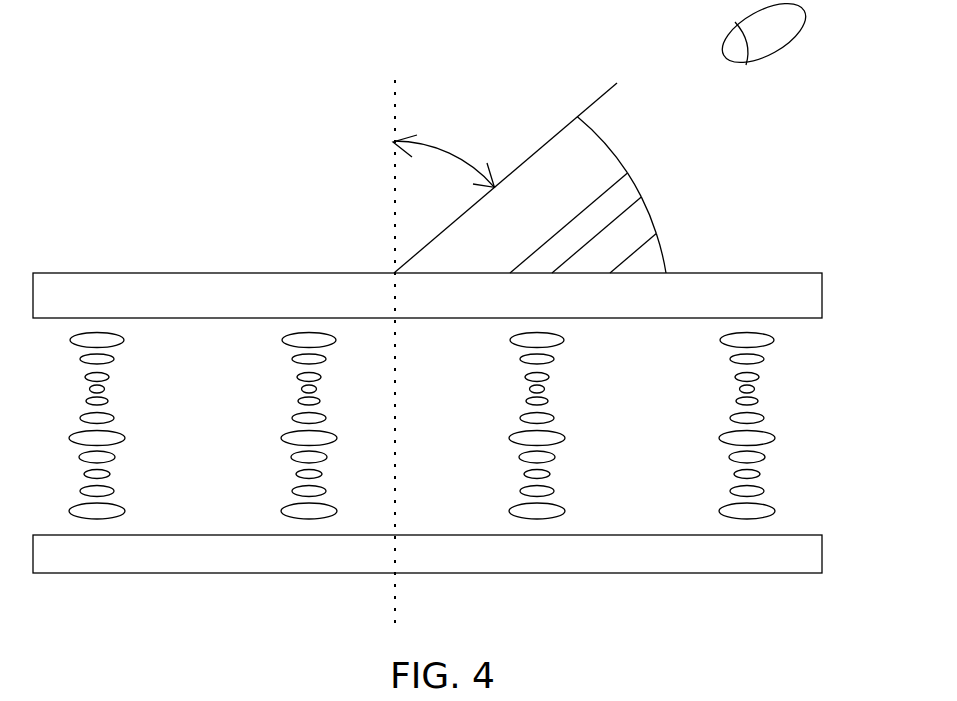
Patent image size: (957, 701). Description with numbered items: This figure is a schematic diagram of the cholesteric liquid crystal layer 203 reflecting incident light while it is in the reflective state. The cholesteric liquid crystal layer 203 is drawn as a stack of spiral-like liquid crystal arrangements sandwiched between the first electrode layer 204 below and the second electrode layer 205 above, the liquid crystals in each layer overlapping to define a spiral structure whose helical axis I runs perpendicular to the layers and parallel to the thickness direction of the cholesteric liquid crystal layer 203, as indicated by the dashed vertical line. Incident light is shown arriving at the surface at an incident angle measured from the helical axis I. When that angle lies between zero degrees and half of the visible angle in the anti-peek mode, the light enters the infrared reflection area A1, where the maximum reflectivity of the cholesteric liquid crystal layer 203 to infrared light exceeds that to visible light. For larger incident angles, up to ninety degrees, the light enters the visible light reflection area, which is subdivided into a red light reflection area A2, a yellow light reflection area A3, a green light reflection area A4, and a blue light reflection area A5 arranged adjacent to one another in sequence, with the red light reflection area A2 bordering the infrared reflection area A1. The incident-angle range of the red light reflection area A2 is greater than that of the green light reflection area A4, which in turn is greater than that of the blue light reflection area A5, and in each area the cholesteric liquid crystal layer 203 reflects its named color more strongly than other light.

The infrared reflection area A1 is at (482, 113).
The red light reflection area A2 is at (585, 162).
The yellow light reflection area A3 is at (620, 197).
The green light reflection area A4 is at (638, 232).
The blue light reflection area A5 is at (645, 265).
The cholesteric liquid crystal layer 203 is at (815, 333).
The first electrode layer 204 is at (803, 553).
The second electrode layer 205 is at (803, 295).
The helical axis I is at (392, 335).